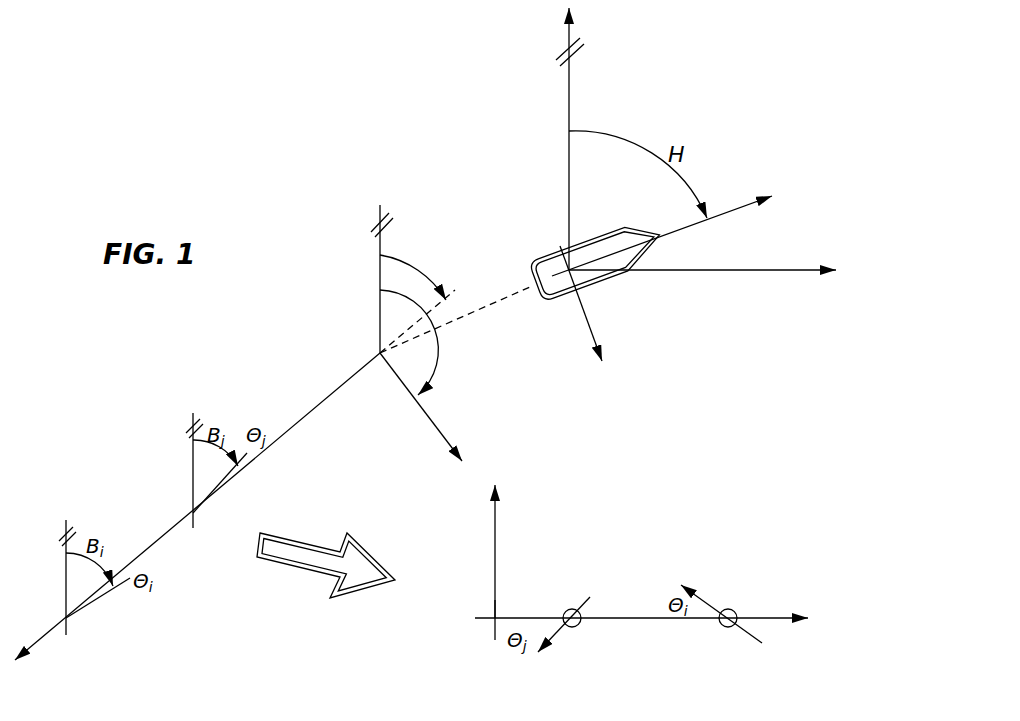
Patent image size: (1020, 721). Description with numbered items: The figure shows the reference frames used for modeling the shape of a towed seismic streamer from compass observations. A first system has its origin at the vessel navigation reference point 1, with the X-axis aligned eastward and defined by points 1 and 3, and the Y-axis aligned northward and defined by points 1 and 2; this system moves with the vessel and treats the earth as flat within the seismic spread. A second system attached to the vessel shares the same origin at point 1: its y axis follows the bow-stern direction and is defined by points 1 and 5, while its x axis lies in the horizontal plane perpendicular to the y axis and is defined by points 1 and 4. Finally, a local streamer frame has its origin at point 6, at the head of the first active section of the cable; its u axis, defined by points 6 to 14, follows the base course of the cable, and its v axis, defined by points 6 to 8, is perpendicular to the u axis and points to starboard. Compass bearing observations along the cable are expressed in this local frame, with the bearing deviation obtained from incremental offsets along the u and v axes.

The vessel navigation reference point 1 is at (569, 270).
The Y-axis north point 2 is at (566, 22).
The X-axis east point 3 is at (810, 268).
The vessel x axis point 4 is at (600, 346).
The vessel y axis point 5 is at (752, 200).
The streamer local reference frame origin 6 is at (378, 353).
The v axis point 8 is at (463, 452).
The u axis point 14 is at (24, 660).